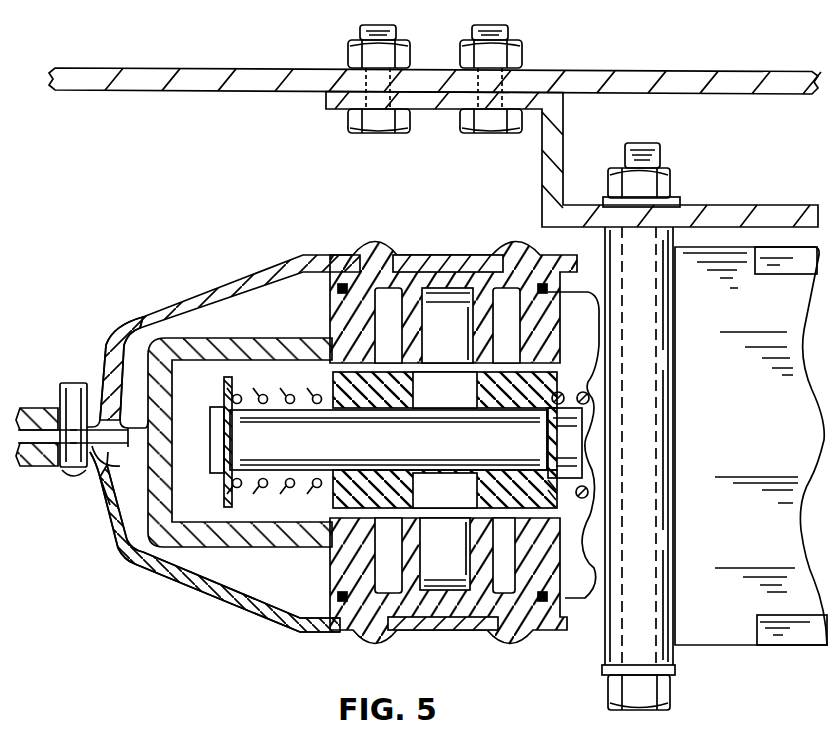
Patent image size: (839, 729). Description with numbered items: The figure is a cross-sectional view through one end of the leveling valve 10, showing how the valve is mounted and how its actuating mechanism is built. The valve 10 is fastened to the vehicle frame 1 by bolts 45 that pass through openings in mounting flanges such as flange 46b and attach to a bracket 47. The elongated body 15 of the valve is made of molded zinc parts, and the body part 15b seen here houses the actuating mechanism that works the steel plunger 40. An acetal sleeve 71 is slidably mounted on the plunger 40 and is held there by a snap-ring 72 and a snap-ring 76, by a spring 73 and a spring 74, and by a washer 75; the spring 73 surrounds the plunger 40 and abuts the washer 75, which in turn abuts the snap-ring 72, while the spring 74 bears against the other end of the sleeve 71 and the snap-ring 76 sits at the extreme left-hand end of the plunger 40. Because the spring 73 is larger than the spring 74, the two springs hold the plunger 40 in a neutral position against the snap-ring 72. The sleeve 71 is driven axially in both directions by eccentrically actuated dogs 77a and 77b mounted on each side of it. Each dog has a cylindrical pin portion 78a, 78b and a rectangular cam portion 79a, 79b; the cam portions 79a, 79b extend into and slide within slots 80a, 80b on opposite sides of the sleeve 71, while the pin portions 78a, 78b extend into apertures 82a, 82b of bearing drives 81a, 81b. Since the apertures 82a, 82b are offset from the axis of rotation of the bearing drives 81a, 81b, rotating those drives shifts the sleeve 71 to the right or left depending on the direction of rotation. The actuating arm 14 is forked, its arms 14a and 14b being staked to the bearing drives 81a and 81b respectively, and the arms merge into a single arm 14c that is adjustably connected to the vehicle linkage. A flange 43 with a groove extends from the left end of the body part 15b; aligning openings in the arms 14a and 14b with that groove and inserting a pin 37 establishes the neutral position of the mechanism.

The frame 1 is at (287, 93).
The leveling valve 10 is at (304, 226).
The actuating arm 14 is at (96, 524).
The arm 14a is at (166, 576).
The arm 14b is at (148, 318).
The single arm 14c is at (34, 412).
The elongated body 15 is at (726, 635).
The body part 15b is at (266, 548).
The pin 37 is at (87, 387).
The plunger 40 is at (355, 462).
The flange 43 is at (107, 483).
The bolt 45 is at (670, 173).
The flange 46b is at (673, 440).
The bracket 47 is at (718, 212).
The sleeve 71 is at (396, 398).
The snap-ring 72 is at (530, 472).
The spring 73 is at (589, 398).
The spring 74 is at (262, 400).
The washer 75 is at (552, 512).
The snap-ring 76 is at (222, 395).
The dog 77a is at (446, 580).
The dog 77b is at (456, 296).
The cylindrical pin portion 78a is at (464, 561).
The cylindrical pin portion 78b is at (465, 344).
The rectangular cam portion 79a is at (465, 502).
The rectangular cam portion 79b is at (468, 402).
The slot 80a is at (425, 480).
The slot 80b is at (420, 398).
The bearing drive 81a is at (487, 630).
The bearing drive 81b is at (418, 275).
The aperture 82a is at (423, 558).
The aperture 82b is at (459, 299).